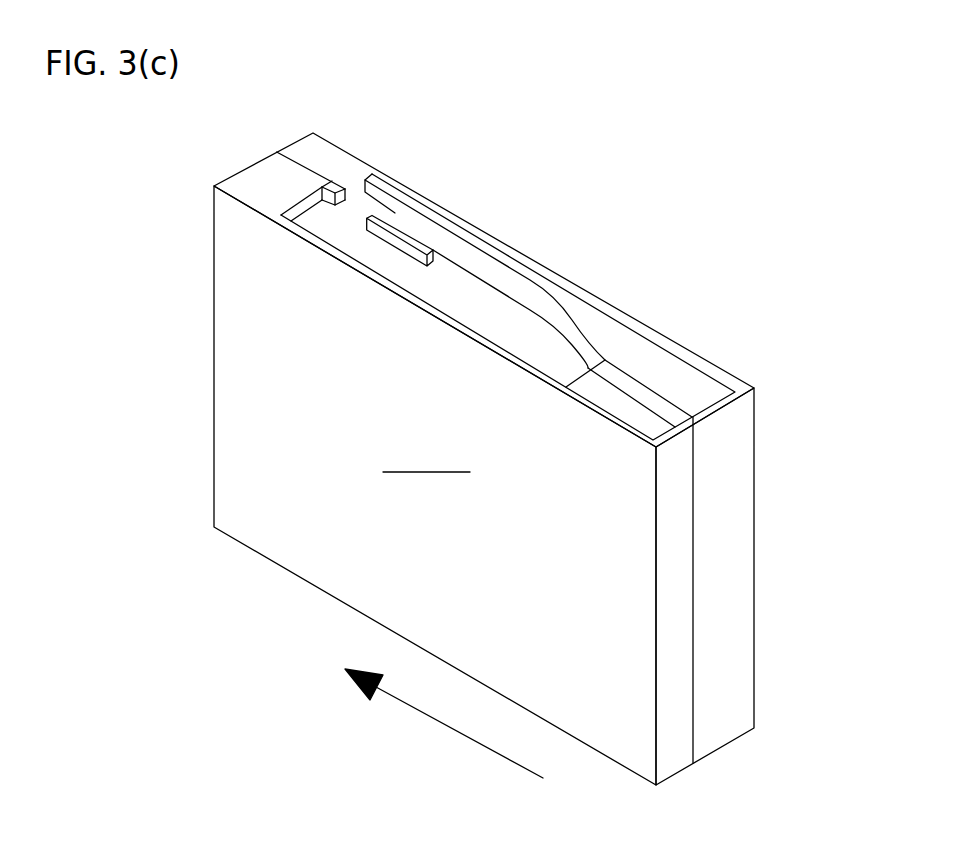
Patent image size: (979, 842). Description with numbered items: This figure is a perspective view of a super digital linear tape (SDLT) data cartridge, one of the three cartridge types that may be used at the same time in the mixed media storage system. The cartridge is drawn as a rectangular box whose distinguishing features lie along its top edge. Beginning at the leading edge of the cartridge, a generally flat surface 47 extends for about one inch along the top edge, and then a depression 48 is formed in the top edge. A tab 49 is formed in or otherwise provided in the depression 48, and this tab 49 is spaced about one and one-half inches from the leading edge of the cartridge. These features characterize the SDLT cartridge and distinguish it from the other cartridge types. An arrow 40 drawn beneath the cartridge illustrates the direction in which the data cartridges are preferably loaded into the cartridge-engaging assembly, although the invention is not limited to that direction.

The flat surface 47 is at (268, 168).
The depression 48 is at (352, 216).
The tab 49 is at (407, 236).
The arrow 40 is at (448, 727).